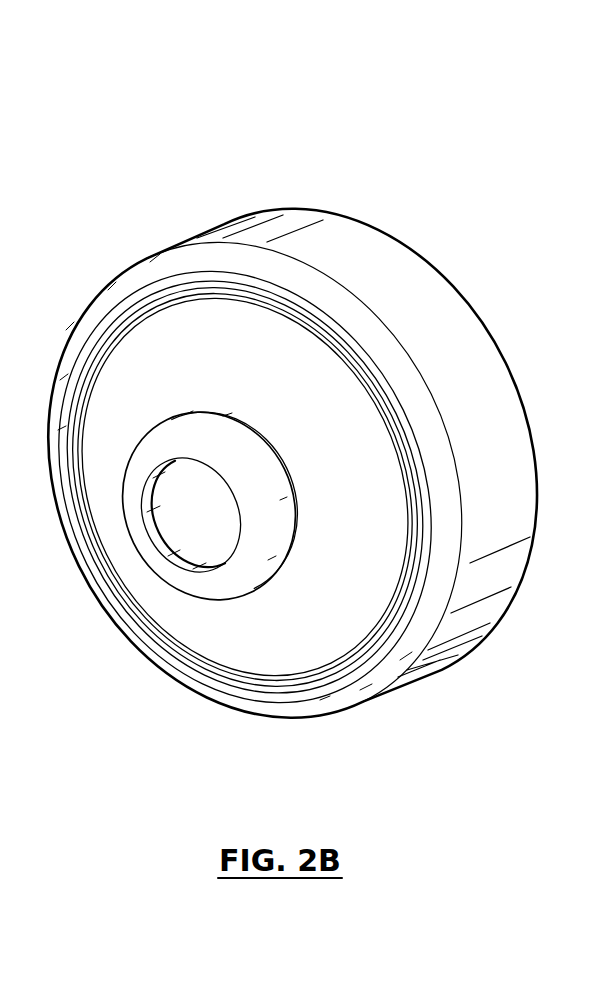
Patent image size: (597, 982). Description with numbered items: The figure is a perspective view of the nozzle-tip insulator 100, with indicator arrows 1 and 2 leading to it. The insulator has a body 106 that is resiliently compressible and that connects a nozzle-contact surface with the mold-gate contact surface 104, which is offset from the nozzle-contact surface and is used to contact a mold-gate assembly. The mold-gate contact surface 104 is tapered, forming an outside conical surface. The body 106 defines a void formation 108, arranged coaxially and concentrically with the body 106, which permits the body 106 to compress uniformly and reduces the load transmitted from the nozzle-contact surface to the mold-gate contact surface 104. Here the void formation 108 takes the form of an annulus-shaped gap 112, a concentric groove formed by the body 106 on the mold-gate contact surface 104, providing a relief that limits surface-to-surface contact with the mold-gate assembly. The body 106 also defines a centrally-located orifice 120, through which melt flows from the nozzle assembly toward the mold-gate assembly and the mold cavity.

The first direction indicator 1 is at (290, 72).
The second direction indicator 2 is at (369, 91).
The nozzle-tip insulator 100 is at (414, 172).
The mold-gate contact surface 104 is at (140, 281).
The body 106 is at (365, 253).
The void formation 108 is at (115, 737).
The annulus-shaped gap 112 is at (178, 620).
The orifice 120 is at (210, 540).